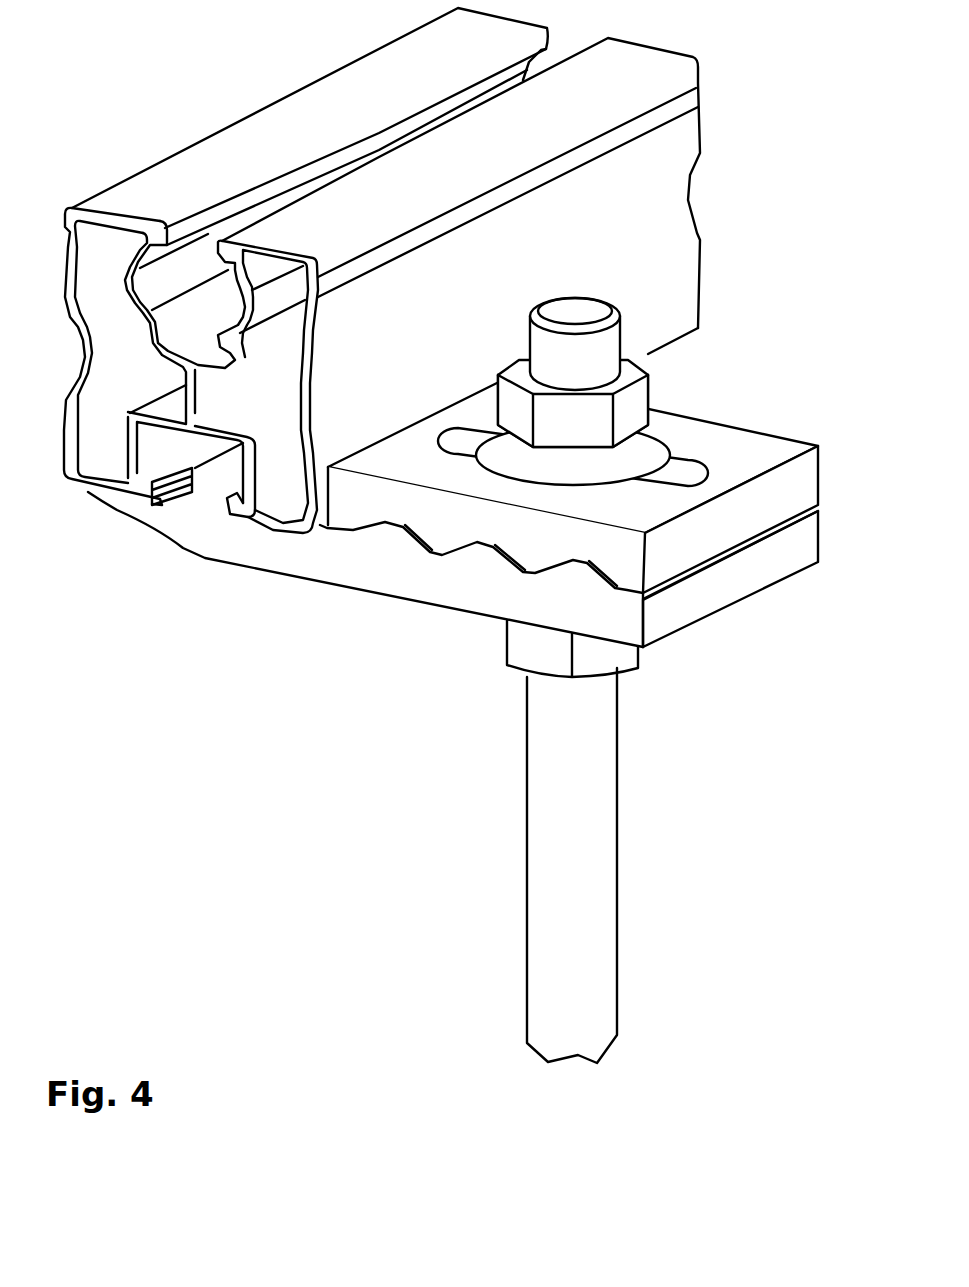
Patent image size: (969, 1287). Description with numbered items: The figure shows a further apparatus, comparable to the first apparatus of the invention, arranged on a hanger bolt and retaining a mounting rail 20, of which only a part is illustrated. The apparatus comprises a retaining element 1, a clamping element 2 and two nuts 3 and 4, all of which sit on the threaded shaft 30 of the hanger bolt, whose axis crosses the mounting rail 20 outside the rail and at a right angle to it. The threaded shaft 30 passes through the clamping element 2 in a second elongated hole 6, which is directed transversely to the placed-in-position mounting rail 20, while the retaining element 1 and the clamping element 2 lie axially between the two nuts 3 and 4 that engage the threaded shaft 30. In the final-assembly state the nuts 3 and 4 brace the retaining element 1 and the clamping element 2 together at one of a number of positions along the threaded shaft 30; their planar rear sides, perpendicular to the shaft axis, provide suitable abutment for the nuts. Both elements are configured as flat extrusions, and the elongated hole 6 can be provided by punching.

The retaining element 1 is at (758, 593).
The clamping element 2 is at (777, 433).
The nut 3 is at (505, 642).
The nut 4 is at (655, 400).
The second elongated hole 6 is at (687, 462).
The mounting rail 20 is at (248, 78).
The threaded shaft 30 is at (617, 867).